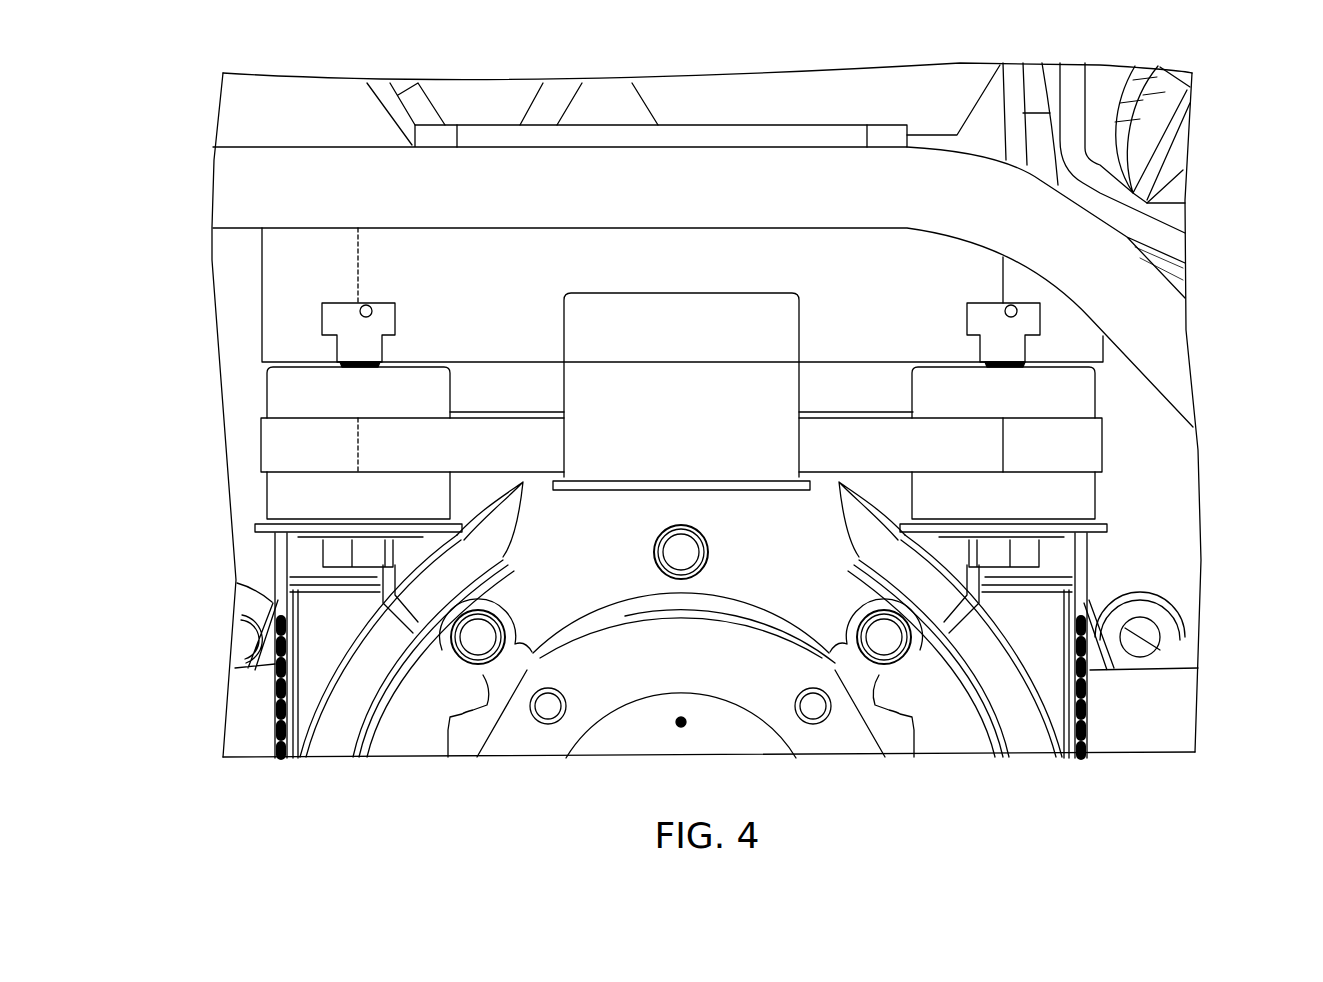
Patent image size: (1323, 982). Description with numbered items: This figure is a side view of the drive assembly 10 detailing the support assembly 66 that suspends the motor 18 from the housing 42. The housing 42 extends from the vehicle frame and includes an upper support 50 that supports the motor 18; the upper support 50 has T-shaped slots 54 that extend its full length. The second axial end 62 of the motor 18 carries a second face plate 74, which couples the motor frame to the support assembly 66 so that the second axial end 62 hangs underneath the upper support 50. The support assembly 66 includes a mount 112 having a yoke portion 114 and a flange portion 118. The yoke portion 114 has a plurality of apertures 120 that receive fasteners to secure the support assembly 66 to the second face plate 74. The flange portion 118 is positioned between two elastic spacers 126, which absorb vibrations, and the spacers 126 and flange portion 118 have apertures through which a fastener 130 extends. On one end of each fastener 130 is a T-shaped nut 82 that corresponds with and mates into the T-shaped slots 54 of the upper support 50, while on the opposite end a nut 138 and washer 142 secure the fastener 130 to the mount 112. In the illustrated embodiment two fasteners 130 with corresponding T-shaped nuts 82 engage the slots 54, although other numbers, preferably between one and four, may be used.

The drive assembly 10 is at (155, 290).
The housing 42 is at (283, 88).
The upper support 50 is at (531, 247).
The support assembly 66 is at (669, 283).
The T-shaped nut 82 is at (340, 318).
The T-shaped slots 54 is at (366, 306).
The fastener 130 is at (390, 360).
The elastic spacers 126 is at (283, 400).
The mount 112 is at (270, 448).
The flange portion 118 is at (1085, 447).
The washer 142 is at (265, 527).
The nut 138 is at (335, 553).
The motor 18 is at (272, 738).
The second face plate 74 is at (389, 744).
The yoke portion 114 is at (780, 595).
The apertures 120 is at (655, 550).
The second axial end 62 is at (958, 773).